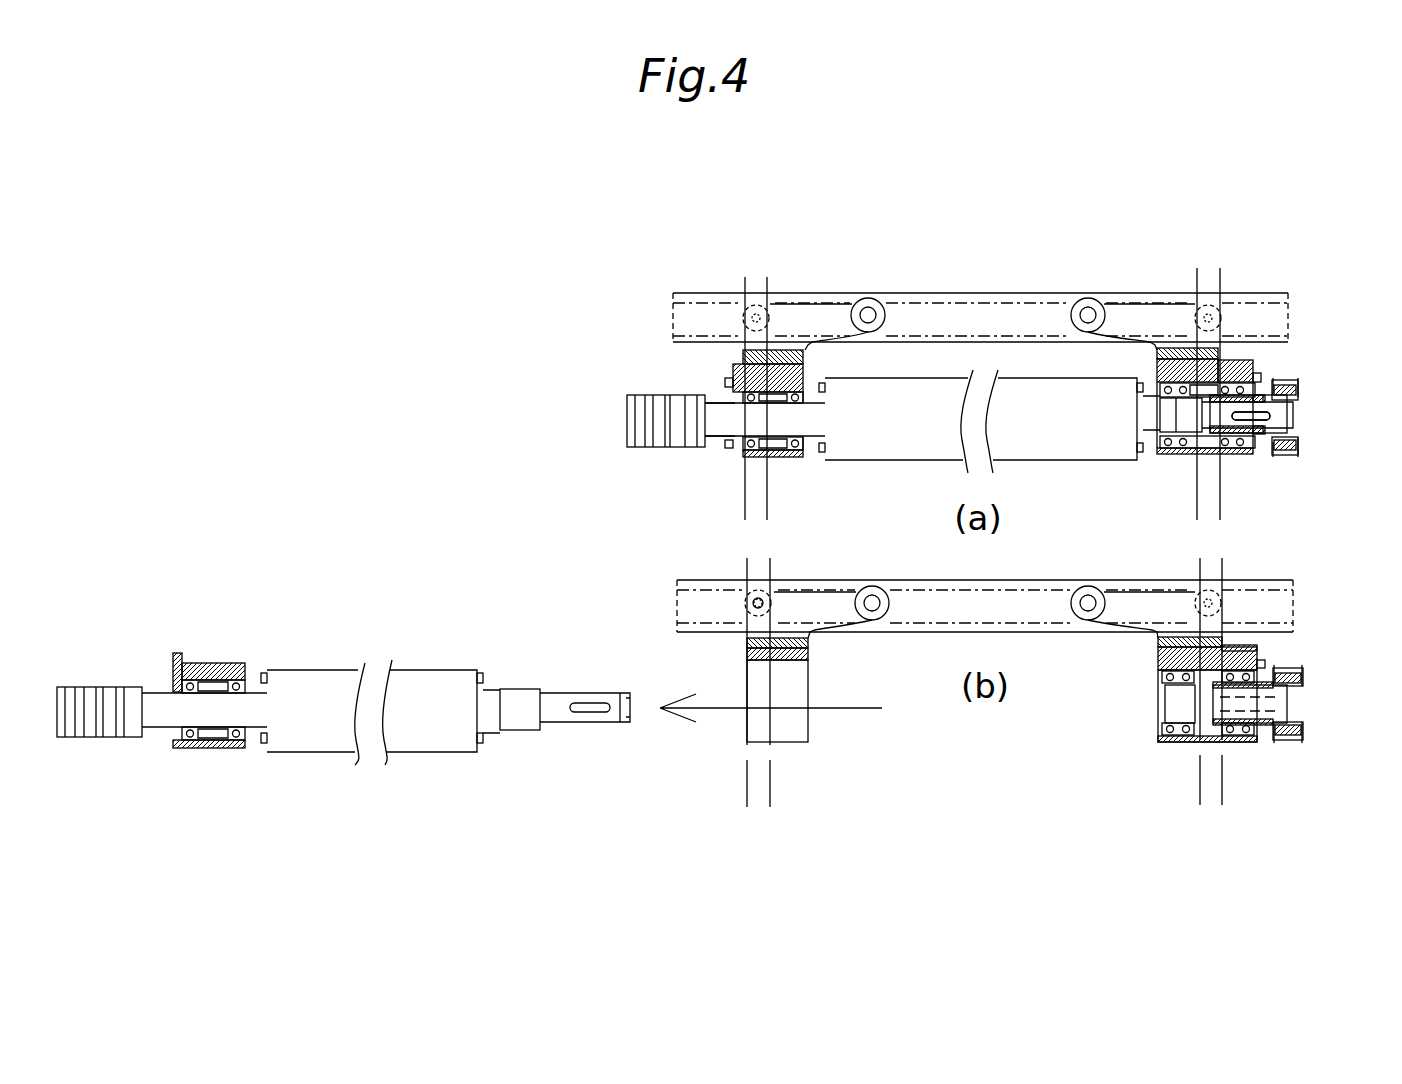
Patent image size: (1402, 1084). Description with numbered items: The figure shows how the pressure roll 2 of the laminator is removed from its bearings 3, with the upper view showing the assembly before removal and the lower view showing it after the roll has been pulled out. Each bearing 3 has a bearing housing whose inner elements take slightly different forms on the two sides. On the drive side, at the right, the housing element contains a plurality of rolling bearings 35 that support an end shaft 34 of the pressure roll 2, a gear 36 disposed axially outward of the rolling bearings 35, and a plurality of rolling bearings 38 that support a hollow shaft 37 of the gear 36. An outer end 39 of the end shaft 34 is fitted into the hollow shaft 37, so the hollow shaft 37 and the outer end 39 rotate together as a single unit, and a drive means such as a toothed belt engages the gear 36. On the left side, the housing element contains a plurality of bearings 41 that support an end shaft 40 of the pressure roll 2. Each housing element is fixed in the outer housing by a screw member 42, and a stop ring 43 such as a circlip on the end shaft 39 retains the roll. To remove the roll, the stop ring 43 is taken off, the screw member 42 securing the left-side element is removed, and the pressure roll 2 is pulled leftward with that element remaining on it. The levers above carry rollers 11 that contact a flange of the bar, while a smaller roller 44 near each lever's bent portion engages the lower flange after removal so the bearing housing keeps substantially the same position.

The pressure roll 2 is at (1101, 448).
The bearing 3 is at (163, 774).
The roller 11 is at (866, 298).
The end shaft 34 is at (1177, 418).
The rolling bearings 35 is at (1187, 348).
The gear 36 is at (1294, 472).
The hollow shaft 37 is at (1231, 453).
The rolling bearings 38 is at (1253, 360).
The outer end of the end shaft 39 is at (1275, 375).
The end shaft 40 is at (716, 412).
The bearings 41 is at (790, 455).
The screw member 42 is at (728, 372).
The stop ring 43 is at (1297, 402).
The roller 44 is at (745, 590).